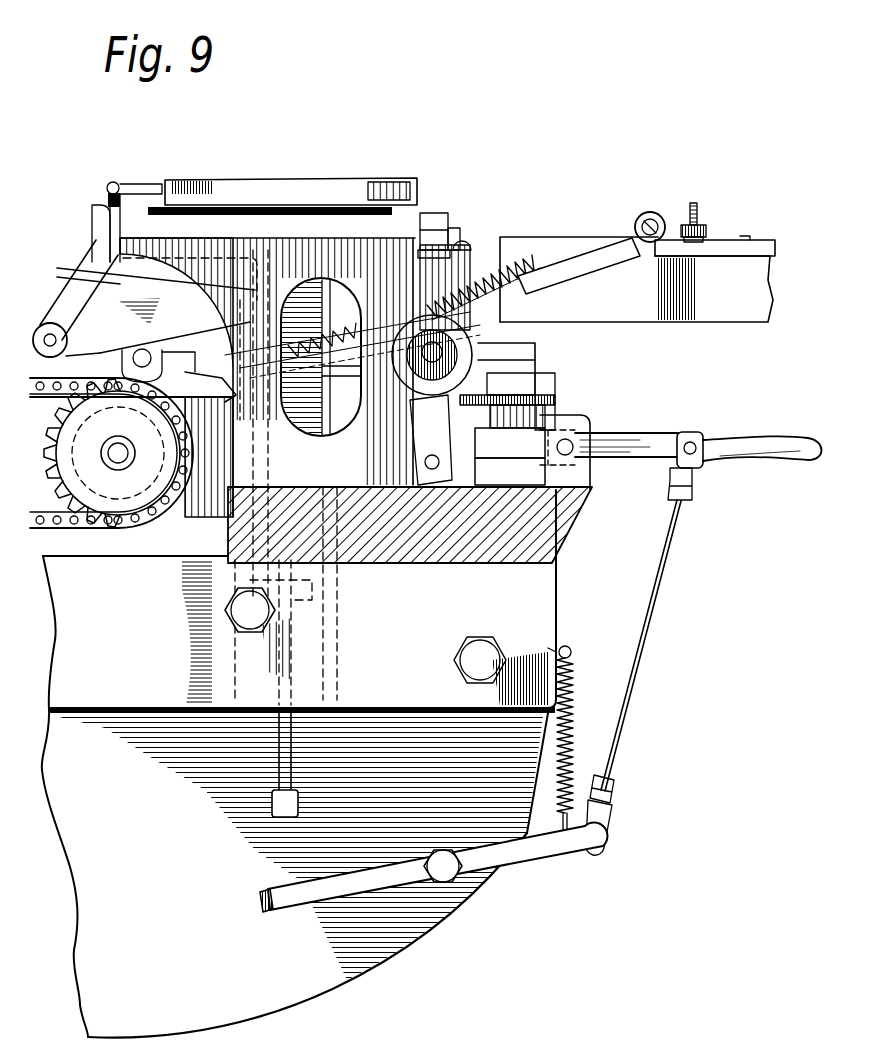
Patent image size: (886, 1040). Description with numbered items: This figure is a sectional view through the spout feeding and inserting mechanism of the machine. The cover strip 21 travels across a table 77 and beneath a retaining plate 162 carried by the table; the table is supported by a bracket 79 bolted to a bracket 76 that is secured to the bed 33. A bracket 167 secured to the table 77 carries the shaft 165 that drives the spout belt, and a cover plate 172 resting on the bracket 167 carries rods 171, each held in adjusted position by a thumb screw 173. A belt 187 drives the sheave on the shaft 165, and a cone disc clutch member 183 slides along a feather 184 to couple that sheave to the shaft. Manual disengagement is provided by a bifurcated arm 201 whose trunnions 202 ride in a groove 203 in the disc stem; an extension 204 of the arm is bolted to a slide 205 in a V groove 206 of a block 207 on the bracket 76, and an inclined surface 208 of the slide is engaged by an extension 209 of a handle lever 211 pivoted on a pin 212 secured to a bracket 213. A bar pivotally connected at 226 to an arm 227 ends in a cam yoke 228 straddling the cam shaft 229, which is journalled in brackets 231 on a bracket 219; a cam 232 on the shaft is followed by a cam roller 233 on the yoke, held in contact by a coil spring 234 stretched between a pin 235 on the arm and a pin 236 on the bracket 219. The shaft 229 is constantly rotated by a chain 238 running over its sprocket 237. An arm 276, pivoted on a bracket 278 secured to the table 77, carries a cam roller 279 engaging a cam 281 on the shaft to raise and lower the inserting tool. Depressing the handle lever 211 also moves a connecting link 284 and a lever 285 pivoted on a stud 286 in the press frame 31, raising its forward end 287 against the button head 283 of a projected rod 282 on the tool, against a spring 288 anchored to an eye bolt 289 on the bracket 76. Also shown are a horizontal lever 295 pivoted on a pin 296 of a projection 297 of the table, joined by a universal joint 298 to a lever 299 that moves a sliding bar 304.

The cover strip 21 is at (218, 206).
The retaining plate 162 is at (308, 220).
The bracket 219 is at (300, 312).
The projection 297 is at (430, 212).
The pin 296 is at (442, 213).
The horizontal lever 295 is at (454, 232).
The universal joint 298 is at (464, 240).
The lever 299 is at (472, 246).
The coil spring 234 is at (530, 262).
The pin 235 is at (548, 262).
The arm 227 is at (612, 245).
The pivotal connection 226 is at (652, 211).
The rod 171 is at (696, 222).
The thumb screw 173 is at (702, 237).
The cover plate 172 is at (760, 242).
The bracket 167 is at (636, 279).
The trunnions 202 is at (470, 312).
The bifurcated arm 201 is at (480, 325).
The groove 203 is at (484, 335).
The feather 184 is at (540, 355).
The cone disc clutch member 183 is at (538, 368).
The extension 204 is at (556, 372).
The slide 205 is at (511, 384).
The V groove 206 is at (556, 398).
The inclined surface 208 is at (548, 418).
The extension 209 is at (510, 443).
The block 207 is at (510, 470).
The bracket 213 is at (562, 455).
The pin 212 is at (574, 452).
The handle lever 211 is at (698, 450).
The connecting link 284 is at (681, 522).
The eye bolt 289 is at (572, 650).
The spring 288 is at (577, 706).
The lever 285 is at (437, 866).
The stud 286 is at (452, 884).
The forward end 287 is at (266, 891).
The projected rod 282 is at (284, 745).
The button head 283 is at (272, 805).
The bed 33 is at (299, 514).
The press frame 31 is at (295, 875).
The bracket 76 is at (552, 520).
The bracket 79 is at (323, 419).
The sliding bar 304 is at (412, 457).
The belt 187 is at (75, 262).
The bracket 278 is at (96, 248).
The cam roller 279 is at (138, 348).
The arm 276 is at (175, 325).
The cam yoke 228 is at (181, 365).
The cam 281 is at (135, 392).
The chain 238 is at (62, 398).
The cam shaft 229 is at (112, 453).
The cam 232 is at (75, 478).
The sprocket 237 is at (92, 512).
The brackets 231 is at (200, 518).
The cam roller 233 is at (240, 380).
The table 77 is at (262, 307).
The shaft 165 is at (422, 352).
The pin 236 is at (326, 386).